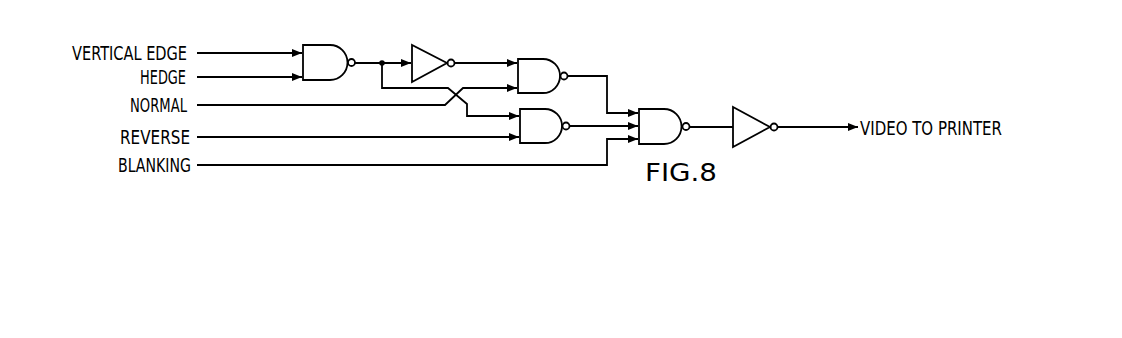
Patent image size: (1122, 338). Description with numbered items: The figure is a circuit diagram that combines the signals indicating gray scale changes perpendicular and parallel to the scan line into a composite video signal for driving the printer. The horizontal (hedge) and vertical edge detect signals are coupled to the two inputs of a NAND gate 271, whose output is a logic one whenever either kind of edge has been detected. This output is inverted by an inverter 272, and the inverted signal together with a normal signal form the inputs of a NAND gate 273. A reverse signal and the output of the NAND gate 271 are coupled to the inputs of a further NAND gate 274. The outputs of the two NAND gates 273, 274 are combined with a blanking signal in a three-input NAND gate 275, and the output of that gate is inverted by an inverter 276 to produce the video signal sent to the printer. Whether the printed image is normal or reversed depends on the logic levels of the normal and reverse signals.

The NAND gate 271 is at (329, 80).
The inverter 272 is at (437, 69).
The NAND gate 273 is at (552, 93).
The NAND gate 274 is at (552, 143).
The three-input NAND gate 275 is at (661, 109).
The inverter 276 is at (756, 111).